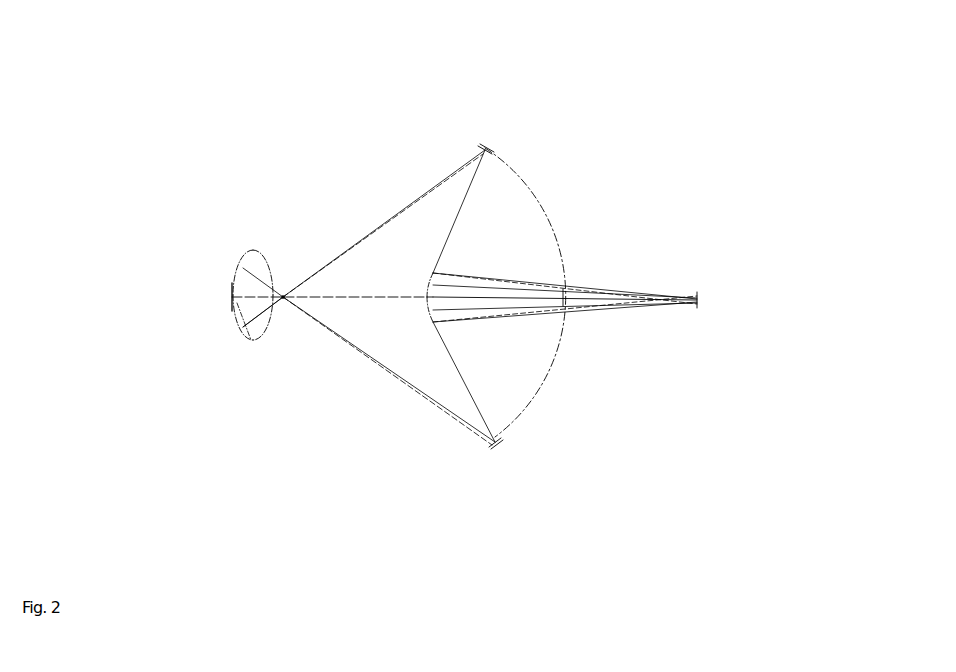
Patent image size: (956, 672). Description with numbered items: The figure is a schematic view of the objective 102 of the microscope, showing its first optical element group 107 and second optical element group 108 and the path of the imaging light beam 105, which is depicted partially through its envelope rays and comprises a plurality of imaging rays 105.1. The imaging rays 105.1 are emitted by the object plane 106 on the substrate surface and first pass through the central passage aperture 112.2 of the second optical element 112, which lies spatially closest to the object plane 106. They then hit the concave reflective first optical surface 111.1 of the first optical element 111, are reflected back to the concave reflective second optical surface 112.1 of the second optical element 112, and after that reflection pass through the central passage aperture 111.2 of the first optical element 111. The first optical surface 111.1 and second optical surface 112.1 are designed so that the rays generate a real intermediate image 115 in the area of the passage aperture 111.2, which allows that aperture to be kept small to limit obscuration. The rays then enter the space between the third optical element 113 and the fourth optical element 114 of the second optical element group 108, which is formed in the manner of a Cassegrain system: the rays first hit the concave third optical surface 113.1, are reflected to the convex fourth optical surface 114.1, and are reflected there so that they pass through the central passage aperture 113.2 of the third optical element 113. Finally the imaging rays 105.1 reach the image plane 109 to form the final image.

The objective 102 is at (672, 65).
The imaging light beam 105 is at (391, 206).
The imaging rays 105.1 is at (247, 348).
The object plane 106 is at (222, 287).
The first optical element group 107 is at (211, 305).
The second optical element group 108 is at (513, 117).
The image plane 109 is at (708, 308).
The first optical element 111 is at (211, 342).
The first optical surface 111.1 is at (244, 251).
The passage aperture of the first optical element 111.2 is at (224, 303).
The second optical element 112 is at (201, 305).
The second optical surface 112.1 is at (255, 255).
The passage aperture of the second optical element 112.2 is at (259, 302).
The third optical element 113 is at (491, 460).
The third optical surface 113.1 is at (501, 165).
The passage aperture of the third optical element 113.2 is at (575, 308).
The fourth optical element 114 is at (584, 363).
The fourth optical surface 114.1 is at (450, 286).
The intermediate image 115 is at (278, 292).